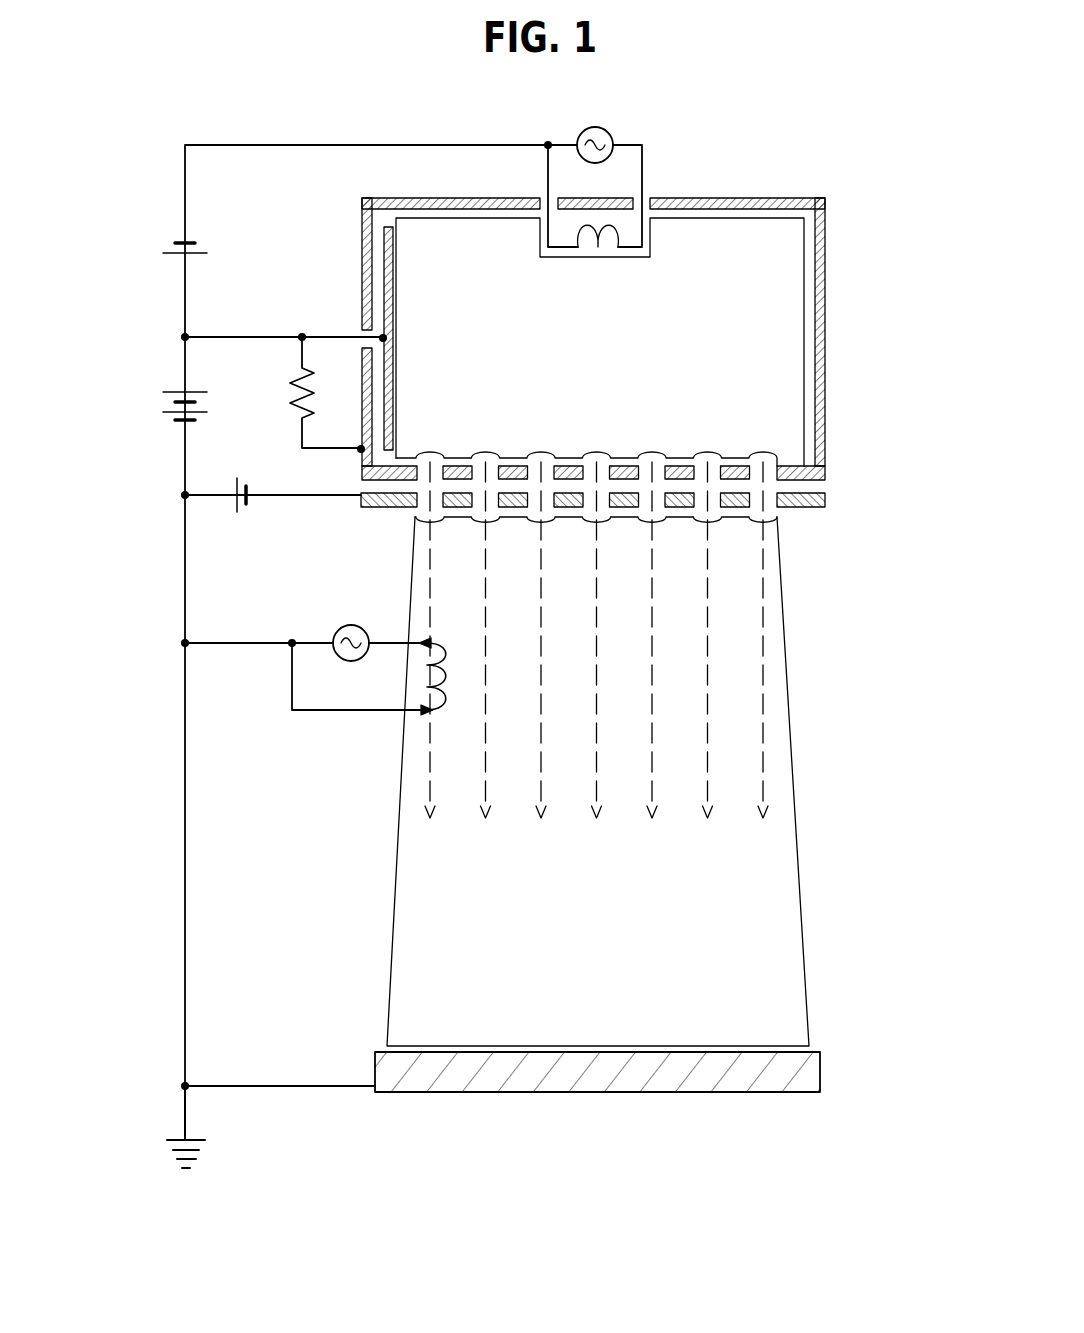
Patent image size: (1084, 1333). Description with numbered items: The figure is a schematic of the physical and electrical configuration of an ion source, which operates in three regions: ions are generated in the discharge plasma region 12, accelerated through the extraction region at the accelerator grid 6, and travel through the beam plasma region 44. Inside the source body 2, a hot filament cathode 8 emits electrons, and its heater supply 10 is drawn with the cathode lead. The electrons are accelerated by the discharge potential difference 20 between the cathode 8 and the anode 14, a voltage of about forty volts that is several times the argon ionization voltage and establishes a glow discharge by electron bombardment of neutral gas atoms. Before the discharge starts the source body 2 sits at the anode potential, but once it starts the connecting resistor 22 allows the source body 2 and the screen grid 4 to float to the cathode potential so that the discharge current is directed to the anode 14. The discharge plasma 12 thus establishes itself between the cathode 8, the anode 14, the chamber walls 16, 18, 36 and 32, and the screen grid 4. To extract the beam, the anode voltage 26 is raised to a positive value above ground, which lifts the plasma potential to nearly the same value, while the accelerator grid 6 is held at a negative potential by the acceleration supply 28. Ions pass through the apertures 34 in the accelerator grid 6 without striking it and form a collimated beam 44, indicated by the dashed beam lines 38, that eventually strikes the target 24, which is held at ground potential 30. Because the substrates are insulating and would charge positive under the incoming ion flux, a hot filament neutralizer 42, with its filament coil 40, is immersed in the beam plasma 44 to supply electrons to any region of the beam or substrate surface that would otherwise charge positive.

The source body 2 is at (591, 310).
The screen grid 4 is at (806, 482).
The accelerator grid 6 is at (827, 502).
The cathode 8 is at (597, 227).
The cathode heater current source 10 is at (613, 133).
The discharge plasma region 12 is at (722, 325).
The anode 14 is at (383, 253).
The chamber wall 16 is at (362, 278).
The chamber wall 18 is at (748, 200).
The discharge voltage Vd 20 is at (197, 255).
The connecting resistor 22 is at (290, 395).
The target 24 is at (821, 1074).
The anode voltage Vanode 26 is at (166, 411).
The acceleration voltage source 28 is at (233, 475).
The ground potential 30 is at (172, 1137).
The chamber wall 32 is at (790, 467).
The apertures 34 is at (772, 508).
The chamber wall 36 is at (827, 388).
The ion beams 38 is at (764, 733).
The neutralizer filament 40 is at (420, 692).
The neutralizer 42 is at (335, 628).
The beam plasma region 44 is at (804, 933).